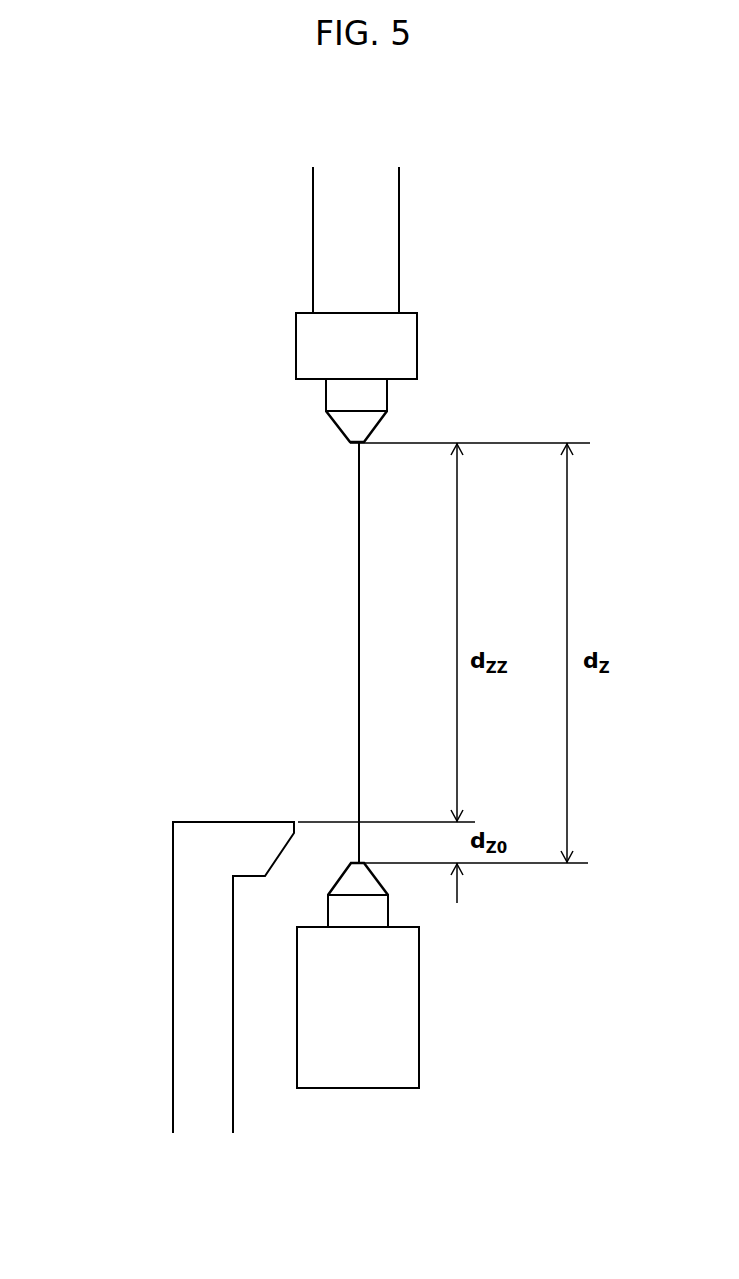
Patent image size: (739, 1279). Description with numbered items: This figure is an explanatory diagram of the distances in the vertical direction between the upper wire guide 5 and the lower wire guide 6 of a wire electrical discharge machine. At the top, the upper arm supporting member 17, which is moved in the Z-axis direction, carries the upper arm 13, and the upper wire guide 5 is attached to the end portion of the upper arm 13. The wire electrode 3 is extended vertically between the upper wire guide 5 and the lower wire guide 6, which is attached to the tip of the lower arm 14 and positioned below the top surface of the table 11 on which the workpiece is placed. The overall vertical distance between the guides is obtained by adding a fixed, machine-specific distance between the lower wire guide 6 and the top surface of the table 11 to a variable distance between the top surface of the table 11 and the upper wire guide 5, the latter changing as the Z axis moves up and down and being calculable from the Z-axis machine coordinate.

The upper arm supporting member 17 is at (313, 208).
The upper arm 13 is at (296, 350).
The upper wire guide 5 is at (326, 410).
The wire electrode 3 is at (359, 605).
The table 11 is at (172, 945).
The lower wire guide 6 is at (388, 908).
The lower arm 14 is at (419, 1032).